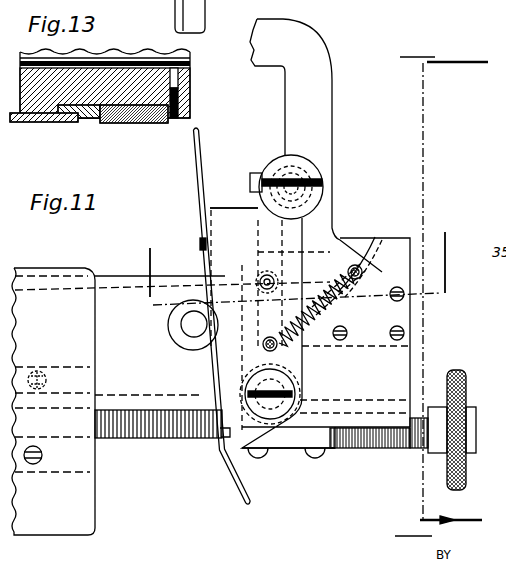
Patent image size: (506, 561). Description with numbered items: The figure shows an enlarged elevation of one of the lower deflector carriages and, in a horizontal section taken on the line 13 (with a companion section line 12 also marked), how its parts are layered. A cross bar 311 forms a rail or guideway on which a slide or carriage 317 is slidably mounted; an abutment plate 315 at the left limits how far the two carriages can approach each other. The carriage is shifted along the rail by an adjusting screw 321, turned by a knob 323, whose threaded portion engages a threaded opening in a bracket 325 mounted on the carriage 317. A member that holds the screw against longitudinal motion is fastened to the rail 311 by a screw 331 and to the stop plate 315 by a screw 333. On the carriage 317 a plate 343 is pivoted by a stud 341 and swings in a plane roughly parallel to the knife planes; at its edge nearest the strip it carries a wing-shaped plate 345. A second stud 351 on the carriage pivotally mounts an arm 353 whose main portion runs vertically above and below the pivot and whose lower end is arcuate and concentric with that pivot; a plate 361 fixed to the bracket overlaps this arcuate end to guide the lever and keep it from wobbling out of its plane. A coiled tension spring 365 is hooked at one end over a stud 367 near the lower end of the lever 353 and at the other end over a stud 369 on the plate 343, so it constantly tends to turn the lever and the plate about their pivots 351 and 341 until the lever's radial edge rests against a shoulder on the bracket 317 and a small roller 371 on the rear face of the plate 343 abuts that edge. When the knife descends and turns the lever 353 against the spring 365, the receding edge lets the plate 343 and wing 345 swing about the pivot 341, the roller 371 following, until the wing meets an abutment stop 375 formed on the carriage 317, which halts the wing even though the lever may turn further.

In FIG. 11, the section line 12- 12 is at (441, 289).
In FIG. 11, the section line 13 is at (292, 271).
In FIG. 11, the cross bar 311 is at (117, 285).
In FIG. 11, the abutment plate 315 is at (84, 505).
In FIG. 13, the carriage 317 is at (148, 49).
In FIG. 11, the carriage 317 is at (418, 366).
In FIG. 11, the adjusting screw 321 is at (153, 440).
In FIG. 11, the knob 323 is at (480, 367).
In FIG. 11, the bracket 325 is at (293, 456).
In FIG. 11, the screw 331 is at (44, 372).
In FIG. 11, the screw 333 is at (50, 455).
In FIG. 11, the stud 341 is at (290, 380).
In FIG. 13, the plate 343 is at (44, 123).
In FIG. 11, the plate 343 is at (231, 208).
In FIG. 11, the wing plate 345 is at (195, 170).
In FIG. 11, the stud 351 is at (320, 168).
In FIG. 13, the arm 353 is at (95, 120).
In FIG. 11, the arm 353 is at (319, 51).
In FIG. 13, the plate 361 is at (152, 124).
In FIG. 11, the plate 361 is at (400, 238).
In FIG. 11, the coiled tension spring 365 is at (328, 286).
In FIG. 11, the stud 367 is at (355, 252).
In FIG. 11, the stud 369 is at (252, 352).
In FIG. 11, the roller 371 is at (262, 272).
In FIG. 11, the abutment stop 375 is at (256, 172).